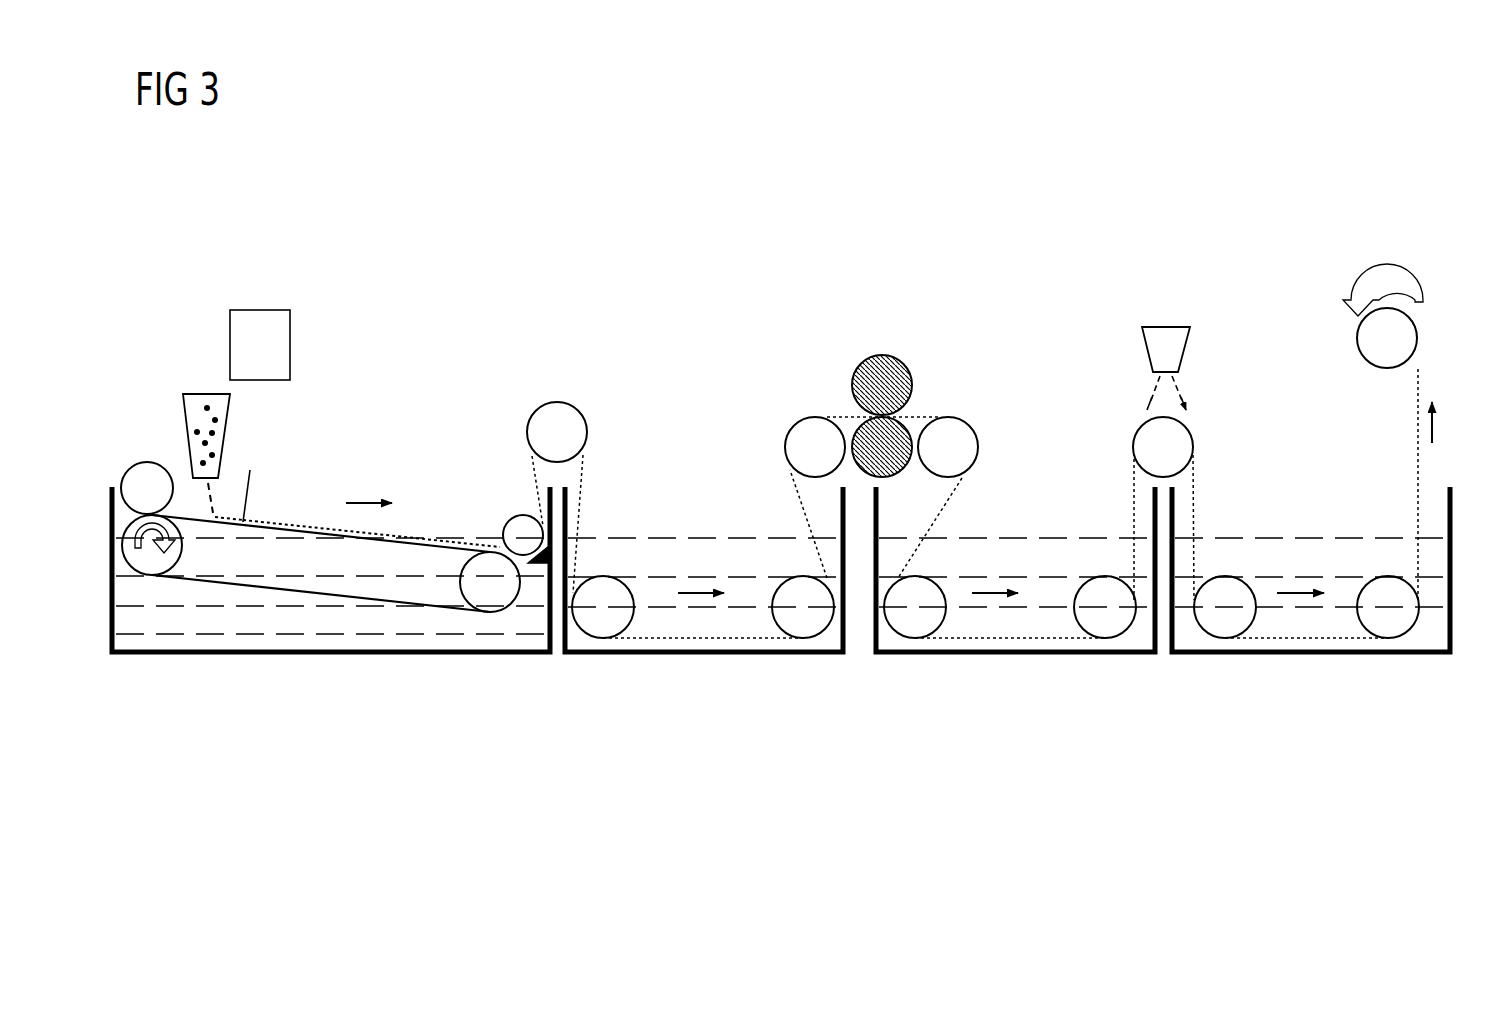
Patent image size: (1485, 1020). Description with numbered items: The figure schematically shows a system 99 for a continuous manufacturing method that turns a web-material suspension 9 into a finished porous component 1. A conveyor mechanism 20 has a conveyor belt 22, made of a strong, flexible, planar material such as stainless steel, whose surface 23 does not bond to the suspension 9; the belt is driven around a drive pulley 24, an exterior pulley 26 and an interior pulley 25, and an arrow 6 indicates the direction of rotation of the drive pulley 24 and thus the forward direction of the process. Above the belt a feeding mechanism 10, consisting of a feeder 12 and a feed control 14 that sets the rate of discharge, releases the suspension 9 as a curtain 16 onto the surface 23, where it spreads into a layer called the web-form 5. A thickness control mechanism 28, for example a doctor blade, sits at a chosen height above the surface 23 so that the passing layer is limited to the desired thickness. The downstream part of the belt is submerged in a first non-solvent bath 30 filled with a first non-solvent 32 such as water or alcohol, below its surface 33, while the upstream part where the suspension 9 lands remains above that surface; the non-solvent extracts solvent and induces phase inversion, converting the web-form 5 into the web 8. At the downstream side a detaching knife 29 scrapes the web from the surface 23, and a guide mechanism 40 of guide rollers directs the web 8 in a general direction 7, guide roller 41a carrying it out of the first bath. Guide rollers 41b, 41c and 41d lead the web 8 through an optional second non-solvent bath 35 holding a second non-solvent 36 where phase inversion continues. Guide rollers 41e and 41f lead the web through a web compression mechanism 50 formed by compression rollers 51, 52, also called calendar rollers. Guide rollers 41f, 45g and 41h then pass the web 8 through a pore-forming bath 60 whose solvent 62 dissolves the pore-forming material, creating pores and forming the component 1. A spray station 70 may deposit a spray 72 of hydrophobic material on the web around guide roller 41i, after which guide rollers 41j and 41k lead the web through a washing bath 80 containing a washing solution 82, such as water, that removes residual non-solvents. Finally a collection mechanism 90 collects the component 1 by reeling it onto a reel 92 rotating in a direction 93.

The system 99 is at (1254, 145).
The feeding mechanism 10 is at (198, 258).
The feed control 14 is at (242, 310).
The feeder 12 is at (209, 393).
The web-material suspension 9 is at (194, 411).
The exterior pulley 26 is at (137, 470).
The surface 23 is at (187, 498).
The curtain 16 is at (225, 492).
The thickness control mechanism 28 is at (252, 483).
The web-form 5 is at (308, 523).
The direction 7 is at (368, 502).
The conveyor mechanism 20 is at (177, 710).
The conveyor belt 22 is at (300, 597).
The drive pulley 24 is at (157, 565).
The interior pulley 25 is at (488, 597).
The arrow 6 is at (140, 552).
The first non-solvent 32 is at (158, 624).
The surface 33 is at (447, 536).
The first non-solvent bath 30 is at (490, 655).
The detaching knife 29 is at (540, 565).
The guide mechanism 40 is at (513, 408).
The guide roller 41a is at (516, 526).
The guide roller 41b is at (551, 417).
The web 8 is at (530, 471).
The second non-solvent bath 35 is at (658, 655).
The second non-solvent 36 is at (629, 549).
The guide roller 41c is at (603, 625).
The guide roller 41d is at (806, 625).
The web compression mechanism 50 is at (811, 295).
The compression roller 51 is at (866, 370).
The compression roller 52 is at (863, 438).
The guide roller 41e is at (798, 437).
The guide roller 41f is at (950, 430).
The pore-forming bath 60 is at (1048, 655).
The solvent 62 is at (1023, 553).
The guide roller 45g is at (914, 625).
The guide roller 41h is at (1105, 625).
The spray station 70 is at (1160, 326).
The spray 72 is at (1181, 383).
The guide roller 41i is at (1150, 435).
The washing bath 80 is at (1427, 655).
The washing solution 82 is at (1326, 553).
The guide roller 41j is at (1222, 625).
The guide roller 41k is at (1386, 625).
The collection mechanism 90 is at (1348, 335).
The reel 92 is at (1357, 350).
The direction 93 is at (1360, 290).
The component 1 is at (1413, 457).